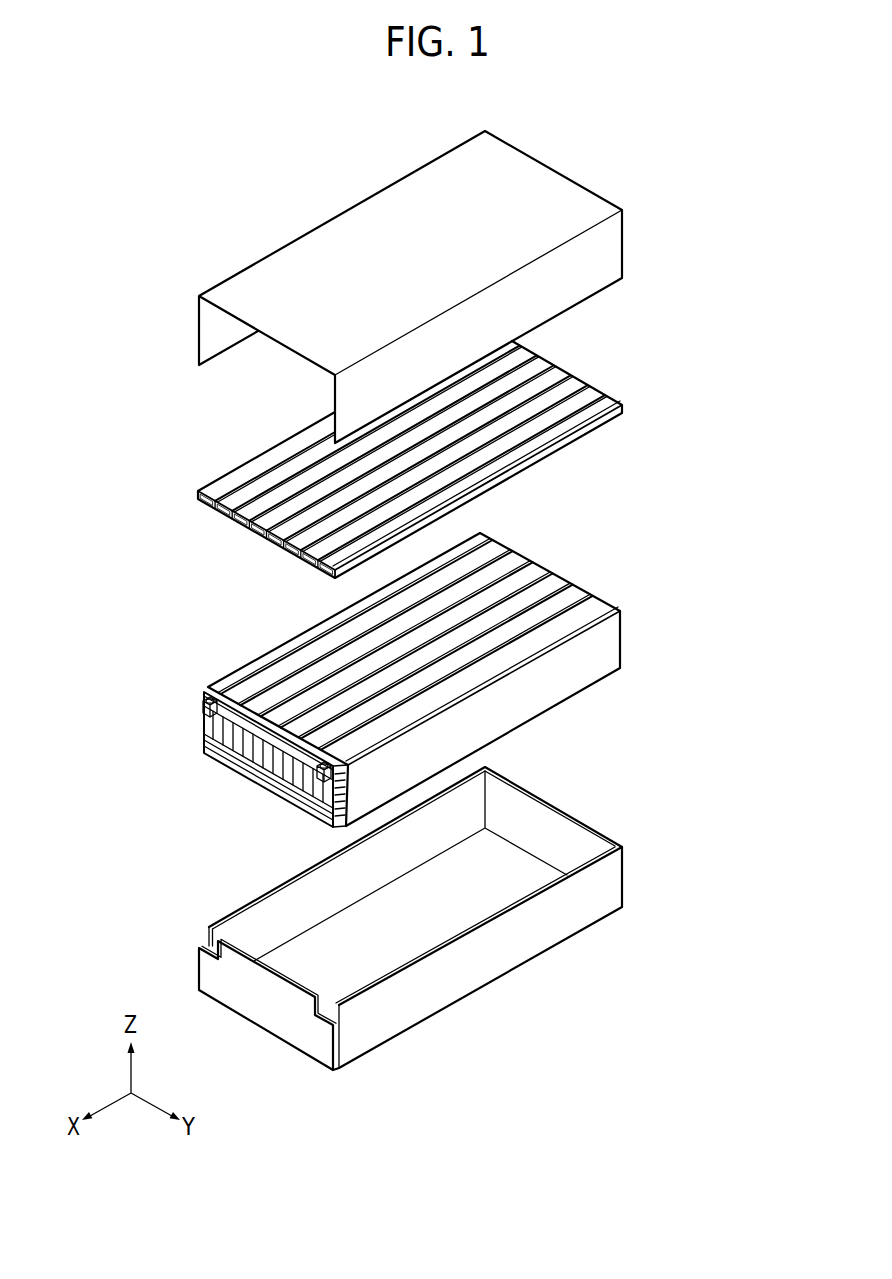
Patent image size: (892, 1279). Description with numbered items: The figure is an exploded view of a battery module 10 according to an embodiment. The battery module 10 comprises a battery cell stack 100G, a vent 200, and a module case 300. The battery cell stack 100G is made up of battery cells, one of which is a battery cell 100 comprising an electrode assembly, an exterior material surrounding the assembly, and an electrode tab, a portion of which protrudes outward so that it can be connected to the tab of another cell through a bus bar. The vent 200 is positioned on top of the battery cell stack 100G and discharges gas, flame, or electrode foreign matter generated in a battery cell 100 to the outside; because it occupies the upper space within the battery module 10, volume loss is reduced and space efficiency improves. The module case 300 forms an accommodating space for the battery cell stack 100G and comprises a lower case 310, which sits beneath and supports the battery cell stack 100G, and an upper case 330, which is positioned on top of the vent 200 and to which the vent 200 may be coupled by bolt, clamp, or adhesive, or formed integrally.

The battery module 10 is at (210, 139).
The battery cell 100 is at (414, 680).
The battery cell stack 100G is at (208, 642).
The vent 200 is at (208, 453).
The module case 300 is at (746, 899).
The lower case 310 is at (622, 878).
The upper case 330 is at (622, 263).